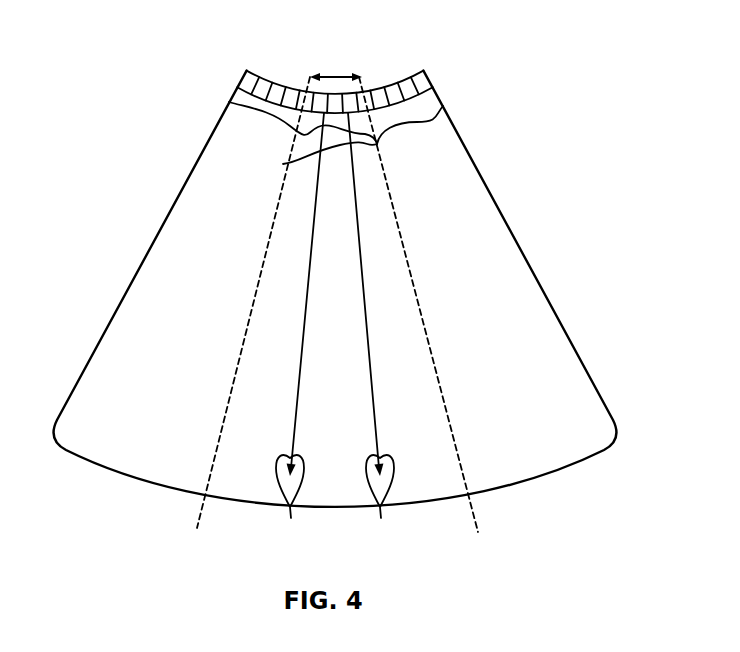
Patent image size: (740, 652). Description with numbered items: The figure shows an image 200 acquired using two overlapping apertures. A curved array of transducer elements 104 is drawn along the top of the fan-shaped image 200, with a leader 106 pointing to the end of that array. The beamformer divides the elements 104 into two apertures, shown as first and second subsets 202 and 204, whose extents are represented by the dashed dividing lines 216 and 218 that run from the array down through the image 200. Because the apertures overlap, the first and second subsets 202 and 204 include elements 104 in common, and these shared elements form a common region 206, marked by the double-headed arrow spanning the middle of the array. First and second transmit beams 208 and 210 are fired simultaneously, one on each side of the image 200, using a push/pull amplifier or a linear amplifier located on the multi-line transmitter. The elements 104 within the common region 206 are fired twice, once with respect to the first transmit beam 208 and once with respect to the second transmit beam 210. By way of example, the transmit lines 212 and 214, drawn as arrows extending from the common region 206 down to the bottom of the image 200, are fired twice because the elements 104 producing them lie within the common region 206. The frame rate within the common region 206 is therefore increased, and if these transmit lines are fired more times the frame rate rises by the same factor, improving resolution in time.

The elements 104 is at (246, 82).
The transducer element 106 is at (431, 65).
The image 200 is at (525, 243).
The first subset 202 is at (298, 130).
The second subset 204 is at (377, 146).
The common region 206 is at (336, 76).
The first transmit beam 208 is at (156, 327).
The second transmit beam 210 is at (466, 327).
The transmit line 212 is at (298, 331).
The transmit line 214 is at (374, 331).
The dividing line 216 is at (214, 434).
The dividing line 218 is at (455, 435).